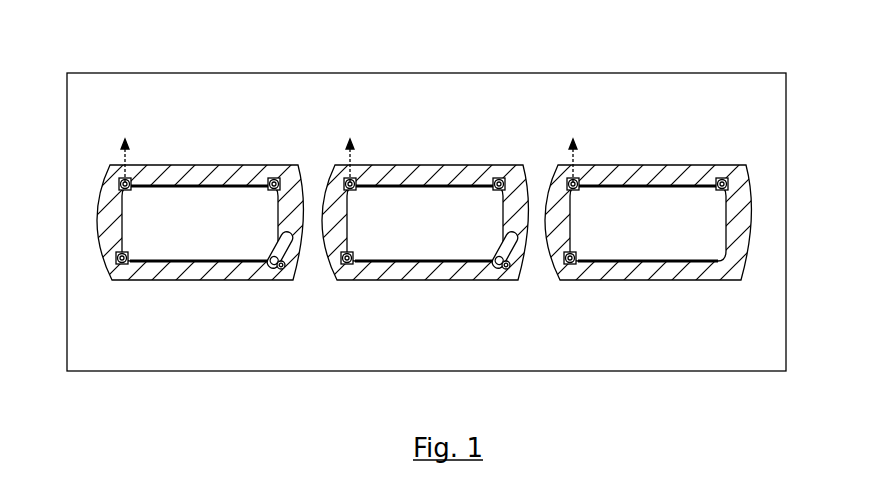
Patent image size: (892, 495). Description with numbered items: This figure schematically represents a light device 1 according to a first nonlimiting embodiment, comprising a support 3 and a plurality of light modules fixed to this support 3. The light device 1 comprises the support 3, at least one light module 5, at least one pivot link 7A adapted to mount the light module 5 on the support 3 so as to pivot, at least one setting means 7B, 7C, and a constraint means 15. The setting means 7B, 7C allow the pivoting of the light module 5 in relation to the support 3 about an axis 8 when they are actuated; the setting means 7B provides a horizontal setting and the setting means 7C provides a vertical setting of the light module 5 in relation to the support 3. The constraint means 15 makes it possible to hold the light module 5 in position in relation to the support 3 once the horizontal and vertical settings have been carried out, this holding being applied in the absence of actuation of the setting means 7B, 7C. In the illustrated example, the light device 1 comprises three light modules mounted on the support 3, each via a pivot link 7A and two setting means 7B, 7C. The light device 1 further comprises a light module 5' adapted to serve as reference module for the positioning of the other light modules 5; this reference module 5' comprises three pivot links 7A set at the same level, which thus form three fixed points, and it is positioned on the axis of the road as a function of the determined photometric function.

The light device 1 is at (186, 60).
The support 3 is at (190, 178).
The light module 5 is at (312, 223).
The reference light module 5' is at (648, 223).
The pivot link 7A is at (113, 188).
The setting means 7B is at (283, 178).
The setting means 7C is at (123, 264).
The axis 8 is at (349, 151).
The constraint means 15 is at (292, 281).